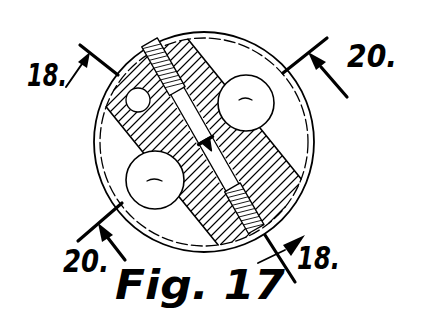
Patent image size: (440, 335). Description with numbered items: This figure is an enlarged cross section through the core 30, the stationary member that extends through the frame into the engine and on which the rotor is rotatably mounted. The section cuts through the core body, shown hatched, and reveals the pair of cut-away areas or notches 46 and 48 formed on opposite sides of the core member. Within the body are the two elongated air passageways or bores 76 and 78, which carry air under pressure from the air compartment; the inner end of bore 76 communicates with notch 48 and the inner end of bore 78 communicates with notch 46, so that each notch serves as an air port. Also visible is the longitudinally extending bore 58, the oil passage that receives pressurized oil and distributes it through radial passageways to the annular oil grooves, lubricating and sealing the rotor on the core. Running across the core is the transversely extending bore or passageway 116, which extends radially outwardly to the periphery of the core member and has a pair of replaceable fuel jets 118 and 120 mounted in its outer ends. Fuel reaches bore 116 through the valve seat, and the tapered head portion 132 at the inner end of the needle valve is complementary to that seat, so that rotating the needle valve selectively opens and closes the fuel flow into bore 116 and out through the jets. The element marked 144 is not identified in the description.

The core 30 is at (261, 47).
The notch 46 is at (183, 227).
The notch 48 is at (293, 117).
The longitudinally extending bore 58 is at (126, 106).
The air passageway or bore 76 is at (246, 103).
The air passageway or bore 78 is at (155, 180).
The transversely extending bore or passageway 116 is at (224, 172).
The replaceable fuel jet 118 is at (154, 50).
The replaceable fuel jet 120 is at (270, 236).
The tapered head portion 132 is at (213, 142).
The valve assembly 144 is at (15, 141).